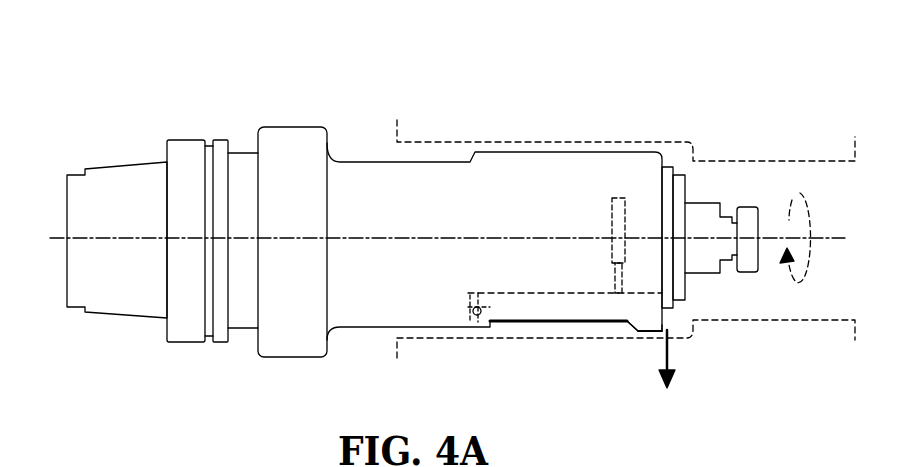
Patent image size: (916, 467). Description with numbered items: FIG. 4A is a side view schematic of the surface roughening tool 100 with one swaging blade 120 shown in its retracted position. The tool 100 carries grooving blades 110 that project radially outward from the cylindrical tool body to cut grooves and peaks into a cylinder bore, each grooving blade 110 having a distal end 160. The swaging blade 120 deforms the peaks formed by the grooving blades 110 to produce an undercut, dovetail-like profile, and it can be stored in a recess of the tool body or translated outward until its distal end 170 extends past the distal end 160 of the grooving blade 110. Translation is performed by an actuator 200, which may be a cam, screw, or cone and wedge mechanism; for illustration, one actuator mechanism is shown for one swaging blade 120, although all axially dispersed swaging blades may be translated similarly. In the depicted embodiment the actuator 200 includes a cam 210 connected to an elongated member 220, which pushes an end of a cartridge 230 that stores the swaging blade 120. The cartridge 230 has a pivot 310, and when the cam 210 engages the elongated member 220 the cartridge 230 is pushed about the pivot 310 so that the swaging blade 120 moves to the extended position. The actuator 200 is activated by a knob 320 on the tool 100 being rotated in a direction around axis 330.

The surface roughening tool 100 is at (590, 68).
The grooving blade 110 is at (650, 333).
The swaging blade 120 is at (632, 330).
The distal end of the grooving blade 160 is at (650, 335).
The distal end of the swaging blade 170 is at (645, 333).
The actuator 200 is at (700, 183).
The cam 210 is at (610, 220).
The elongated member 220 is at (613, 280).
The cartridge 230 is at (563, 318).
The pivot 310 is at (469, 324).
The knob 320 is at (748, 207).
The axis 330 is at (830, 238).